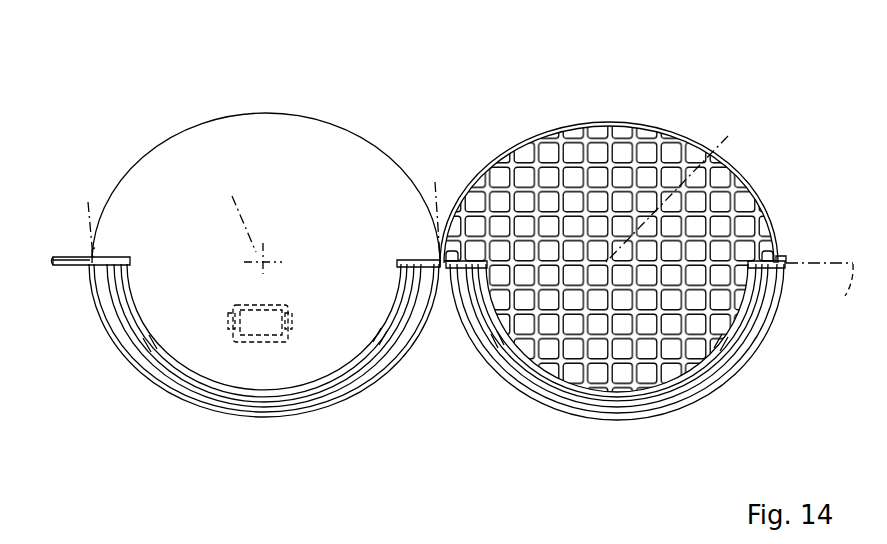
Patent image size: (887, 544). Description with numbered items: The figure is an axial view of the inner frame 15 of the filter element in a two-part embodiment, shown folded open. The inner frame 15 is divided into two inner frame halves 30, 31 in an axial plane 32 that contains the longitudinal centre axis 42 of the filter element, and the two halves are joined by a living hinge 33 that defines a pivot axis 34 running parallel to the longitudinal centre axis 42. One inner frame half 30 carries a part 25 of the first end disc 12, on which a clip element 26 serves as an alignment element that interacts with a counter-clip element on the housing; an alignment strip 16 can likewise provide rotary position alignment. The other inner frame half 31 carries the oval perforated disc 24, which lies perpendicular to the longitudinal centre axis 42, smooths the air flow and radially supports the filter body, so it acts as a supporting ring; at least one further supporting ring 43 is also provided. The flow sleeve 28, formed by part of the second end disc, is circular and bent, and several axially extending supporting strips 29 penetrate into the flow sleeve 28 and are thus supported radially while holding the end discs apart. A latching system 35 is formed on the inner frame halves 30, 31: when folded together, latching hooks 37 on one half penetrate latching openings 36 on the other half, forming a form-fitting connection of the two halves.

The first end disc 12 is at (266, 104).
The inner frame 15 is at (472, 130).
The alignment strip 16 is at (68, 268).
The perforated disc 24 is at (598, 128).
The part of the first end disc 25 is at (335, 148).
The clip element 26 is at (258, 342).
The flow sleeve 28 is at (352, 362).
The supporting strip 29 is at (142, 350).
The inner frame half 30 is at (352, 387).
The inner frame half 31 is at (517, 388).
The axial plane 32 is at (848, 298).
The living hinge 33 is at (440, 270).
The pivot axis 34 is at (440, 207).
The latching system 35 is at (76, 246).
The latching opening 36 is at (88, 216).
The latching hook 37 is at (776, 258).
The longitudinal centre axis 42 is at (472, 190).
The further supporting ring 43 is at (173, 387).